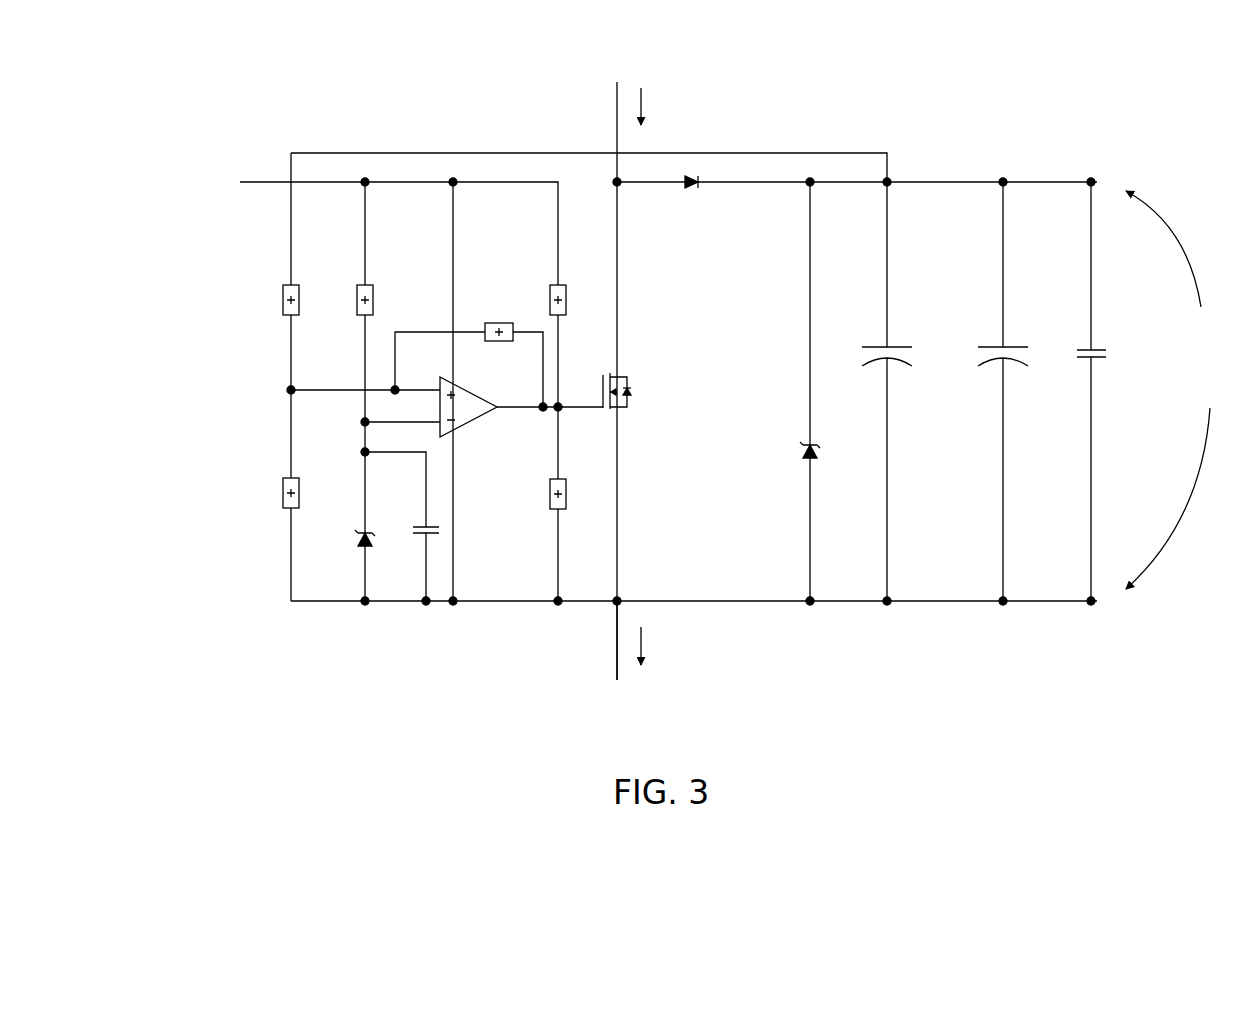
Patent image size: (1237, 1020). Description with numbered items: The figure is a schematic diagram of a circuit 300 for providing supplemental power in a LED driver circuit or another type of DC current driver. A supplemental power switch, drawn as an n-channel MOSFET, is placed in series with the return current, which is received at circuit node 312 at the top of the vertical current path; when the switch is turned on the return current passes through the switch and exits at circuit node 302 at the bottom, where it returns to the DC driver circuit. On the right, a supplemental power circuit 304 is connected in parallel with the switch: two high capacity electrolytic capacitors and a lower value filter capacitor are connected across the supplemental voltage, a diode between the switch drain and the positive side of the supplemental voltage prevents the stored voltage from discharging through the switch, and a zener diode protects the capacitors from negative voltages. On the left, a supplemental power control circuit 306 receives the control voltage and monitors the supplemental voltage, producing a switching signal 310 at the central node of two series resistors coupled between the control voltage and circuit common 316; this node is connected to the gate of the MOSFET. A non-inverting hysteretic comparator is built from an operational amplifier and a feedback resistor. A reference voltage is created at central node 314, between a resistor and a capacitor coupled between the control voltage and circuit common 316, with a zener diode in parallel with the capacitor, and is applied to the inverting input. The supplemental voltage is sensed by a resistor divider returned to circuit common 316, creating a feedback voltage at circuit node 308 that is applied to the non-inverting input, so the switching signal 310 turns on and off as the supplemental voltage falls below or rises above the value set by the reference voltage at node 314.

The circuit 300 is at (456, 716).
The circuit node 302 is at (646, 641).
The supplemental power circuit 304 is at (971, 141).
The supplemental power control circuit 306 is at (352, 92).
The circuit node 308 is at (289, 391).
The switching signal 310 is at (563, 411).
The circuit node 312 is at (616, 97).
The central node 314 is at (362, 423).
The circuit common 316 is at (493, 605).